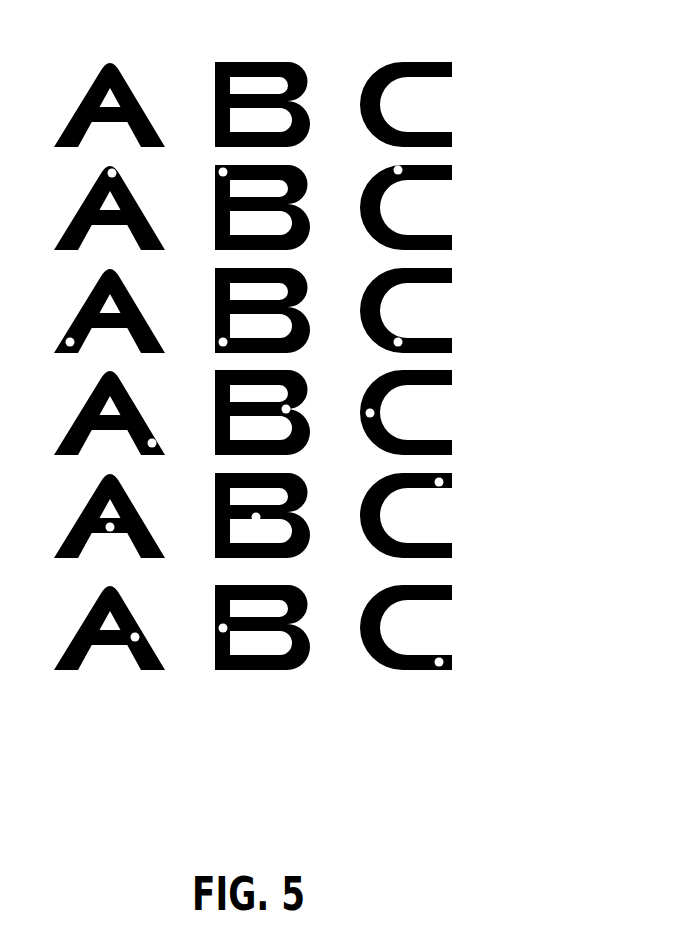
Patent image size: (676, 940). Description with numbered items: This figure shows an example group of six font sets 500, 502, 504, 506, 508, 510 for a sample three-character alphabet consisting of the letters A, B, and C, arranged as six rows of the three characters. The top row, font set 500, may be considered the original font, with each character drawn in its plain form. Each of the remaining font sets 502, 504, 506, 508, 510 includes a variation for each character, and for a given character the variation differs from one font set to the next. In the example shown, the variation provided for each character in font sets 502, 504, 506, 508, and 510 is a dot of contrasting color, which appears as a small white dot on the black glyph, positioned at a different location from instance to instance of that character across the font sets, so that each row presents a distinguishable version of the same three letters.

The font set 500 is at (474, 67).
The font set 502 is at (474, 179).
The font set 504 is at (474, 294).
The font set 506 is at (474, 407).
The font set 508 is at (474, 519).
The font set 510 is at (474, 632).